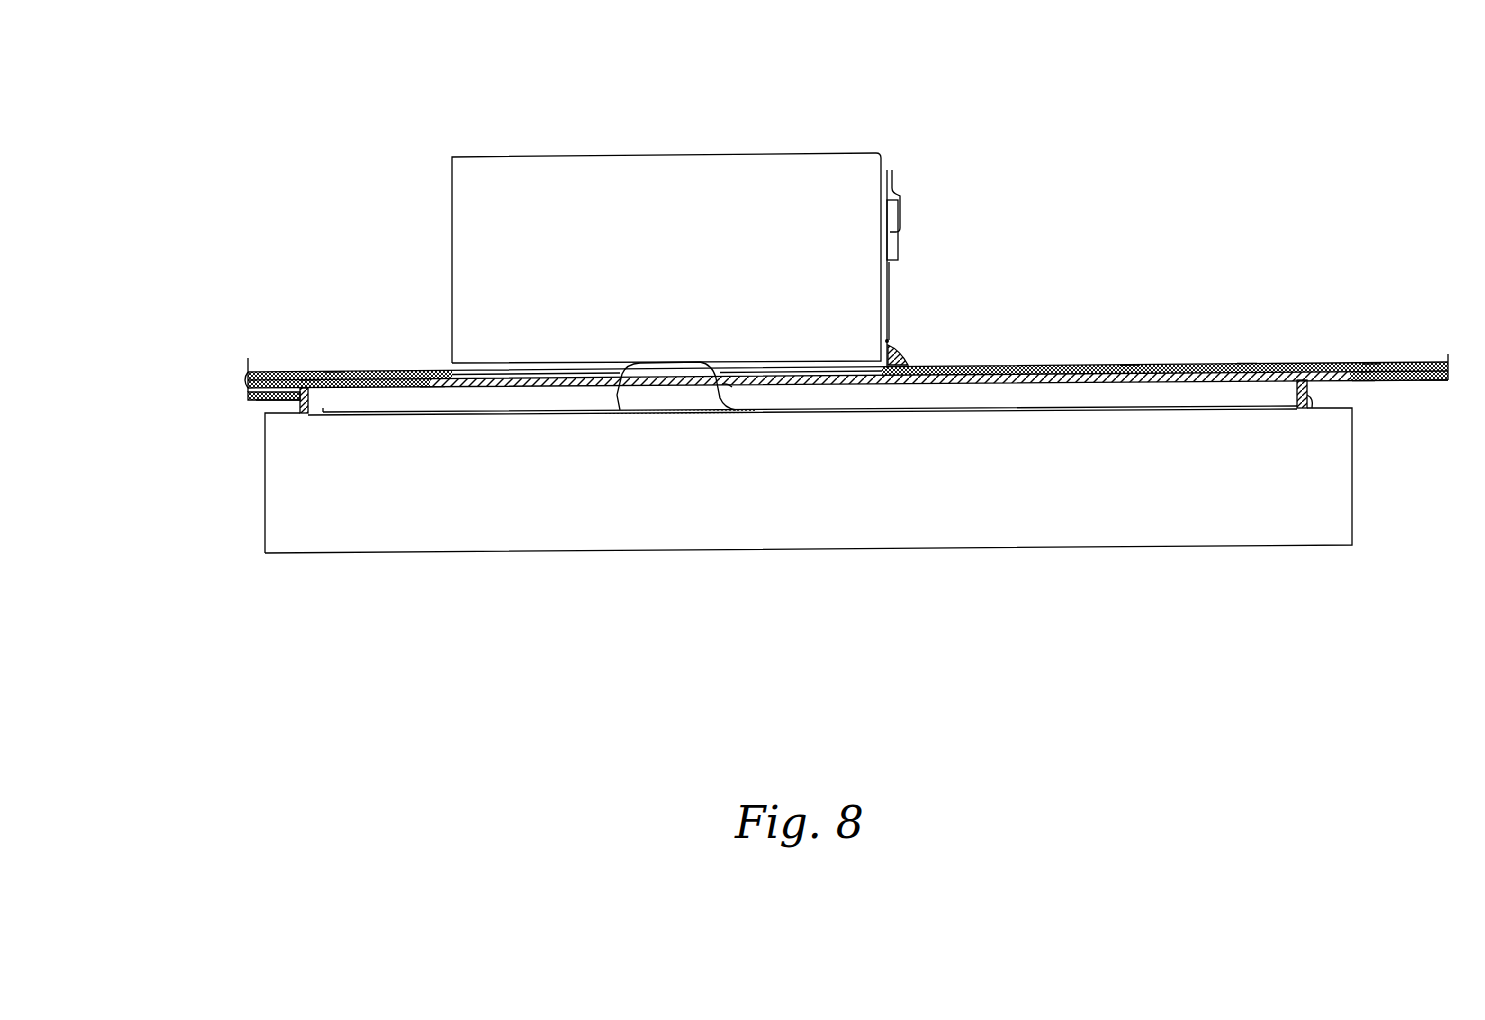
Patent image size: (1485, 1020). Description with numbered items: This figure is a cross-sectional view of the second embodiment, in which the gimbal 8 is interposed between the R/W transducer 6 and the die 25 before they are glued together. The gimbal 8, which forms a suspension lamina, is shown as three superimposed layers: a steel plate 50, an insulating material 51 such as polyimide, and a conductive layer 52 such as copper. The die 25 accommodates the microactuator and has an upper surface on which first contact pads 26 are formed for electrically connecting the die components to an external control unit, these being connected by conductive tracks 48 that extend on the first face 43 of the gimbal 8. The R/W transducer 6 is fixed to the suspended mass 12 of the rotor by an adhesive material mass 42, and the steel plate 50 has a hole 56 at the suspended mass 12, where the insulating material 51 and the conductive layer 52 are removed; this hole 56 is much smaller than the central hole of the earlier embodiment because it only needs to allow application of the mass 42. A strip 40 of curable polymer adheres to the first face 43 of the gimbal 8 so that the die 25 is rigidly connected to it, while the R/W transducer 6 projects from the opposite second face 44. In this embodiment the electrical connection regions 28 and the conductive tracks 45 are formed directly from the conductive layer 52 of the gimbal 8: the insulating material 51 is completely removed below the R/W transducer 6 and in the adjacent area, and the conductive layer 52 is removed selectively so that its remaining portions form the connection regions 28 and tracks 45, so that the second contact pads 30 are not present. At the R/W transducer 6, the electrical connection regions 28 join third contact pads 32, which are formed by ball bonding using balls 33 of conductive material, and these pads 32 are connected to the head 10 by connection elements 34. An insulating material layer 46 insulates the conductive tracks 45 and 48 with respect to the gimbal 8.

The R/W transducer 6 is at (613, 172).
The gimbal 8 is at (413, 368).
The head 10 is at (900, 205).
The suspended mass 12 is at (681, 414).
The die 25 is at (1050, 522).
The first contact pads 26 is at (283, 414).
The electrical connection regions 28 is at (1130, 365).
The second contact pads 30 is at (1247, 363).
The third contact pads 32 is at (889, 340).
The balls 33 is at (906, 357).
The connection elements 34 is at (893, 278).
The strip 40 is at (304, 414).
The adhesive material mass 42 is at (645, 392).
The first face 43 is at (1430, 390).
The second face 44 is at (270, 366).
The conductive tracks 45 is at (1425, 352).
The insulating material layer 46 is at (252, 397).
The conductive tracks 48 is at (266, 401).
The steel plate 50 is at (432, 390).
The insulating material 51 is at (310, 379).
The conductive layer 52 is at (333, 373).
The hole 56 is at (738, 389).